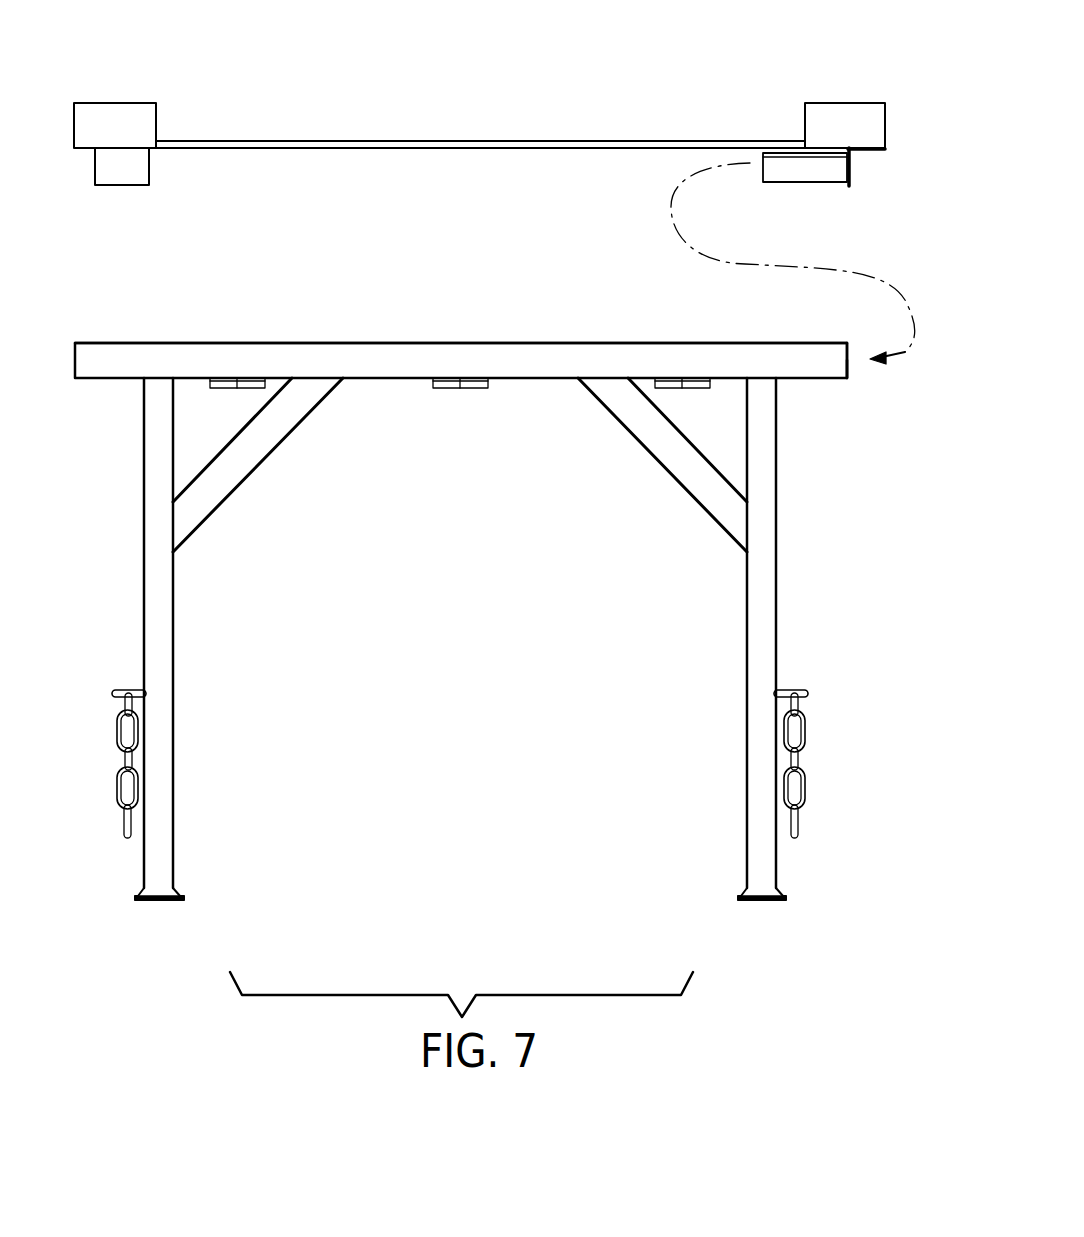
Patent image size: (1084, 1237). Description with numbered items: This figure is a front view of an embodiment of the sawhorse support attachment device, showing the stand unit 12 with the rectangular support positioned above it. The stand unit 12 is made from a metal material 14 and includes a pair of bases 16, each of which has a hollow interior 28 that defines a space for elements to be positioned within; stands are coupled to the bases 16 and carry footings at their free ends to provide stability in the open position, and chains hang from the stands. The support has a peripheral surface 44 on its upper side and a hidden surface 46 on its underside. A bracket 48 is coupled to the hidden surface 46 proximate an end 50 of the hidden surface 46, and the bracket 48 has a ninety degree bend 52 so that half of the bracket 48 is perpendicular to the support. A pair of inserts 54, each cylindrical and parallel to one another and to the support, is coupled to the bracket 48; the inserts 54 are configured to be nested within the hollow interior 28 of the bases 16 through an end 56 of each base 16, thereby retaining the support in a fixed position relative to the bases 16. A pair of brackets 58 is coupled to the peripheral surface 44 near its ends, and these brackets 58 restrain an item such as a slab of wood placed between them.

The stand unit 12 is at (100, 315).
The metal material 14 is at (455, 343).
The pair of bases 16 is at (389, 342).
The hollow interior 28 is at (870, 380).
The peripheral surface 44 is at (480, 142).
The hidden surface 46 is at (372, 150).
The bracket 48 is at (849, 186).
The end 50 is at (905, 160).
The ninety degree bend 52 is at (853, 151).
The pair of inserts 54 is at (782, 172).
The end 56 is at (847, 380).
The pair of brackets 58 is at (122, 117).